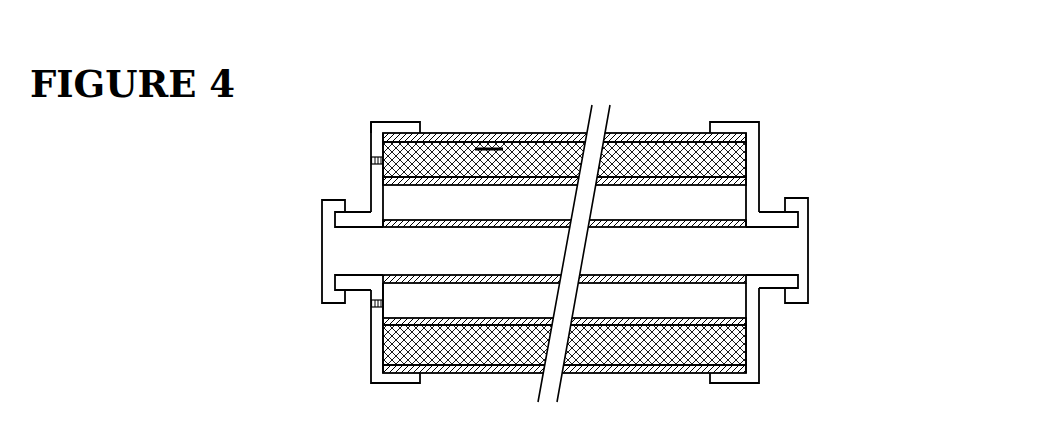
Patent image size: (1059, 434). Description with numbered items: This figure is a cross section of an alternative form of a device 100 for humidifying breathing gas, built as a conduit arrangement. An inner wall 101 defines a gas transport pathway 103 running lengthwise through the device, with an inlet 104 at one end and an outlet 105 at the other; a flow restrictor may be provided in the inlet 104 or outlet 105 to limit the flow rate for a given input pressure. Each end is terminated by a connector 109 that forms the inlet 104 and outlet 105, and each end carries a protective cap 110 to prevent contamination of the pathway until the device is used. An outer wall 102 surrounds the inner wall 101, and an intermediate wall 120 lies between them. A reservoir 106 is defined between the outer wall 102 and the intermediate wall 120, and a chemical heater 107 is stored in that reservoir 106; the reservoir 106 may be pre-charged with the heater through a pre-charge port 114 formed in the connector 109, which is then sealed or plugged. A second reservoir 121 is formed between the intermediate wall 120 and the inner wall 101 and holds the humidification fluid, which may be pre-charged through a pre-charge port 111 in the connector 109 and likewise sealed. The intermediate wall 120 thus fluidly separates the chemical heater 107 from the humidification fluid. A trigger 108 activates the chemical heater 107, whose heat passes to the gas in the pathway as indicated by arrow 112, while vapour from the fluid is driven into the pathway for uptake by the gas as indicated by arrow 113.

The device 100 is at (699, 71).
The inner wall 101 is at (723, 280).
The outer wall 102 is at (492, 368).
The gas transport pathway 103 is at (770, 246).
The inlet 104 is at (343, 245).
The outlet 105 is at (748, 243).
The reservoir 106 is at (730, 345).
The chemical heater 107 is at (667, 345).
The trigger 108 is at (497, 147).
The connector 109 is at (394, 130).
The protective cap 110 is at (328, 210).
The pre-charge port 111 is at (372, 307).
The arrow 112 is at (485, 163).
The arrow 113 is at (442, 208).
The pre-charge port 114 is at (372, 160).
The intermediate wall 120 is at (427, 327).
The second reservoir 121 is at (407, 310).